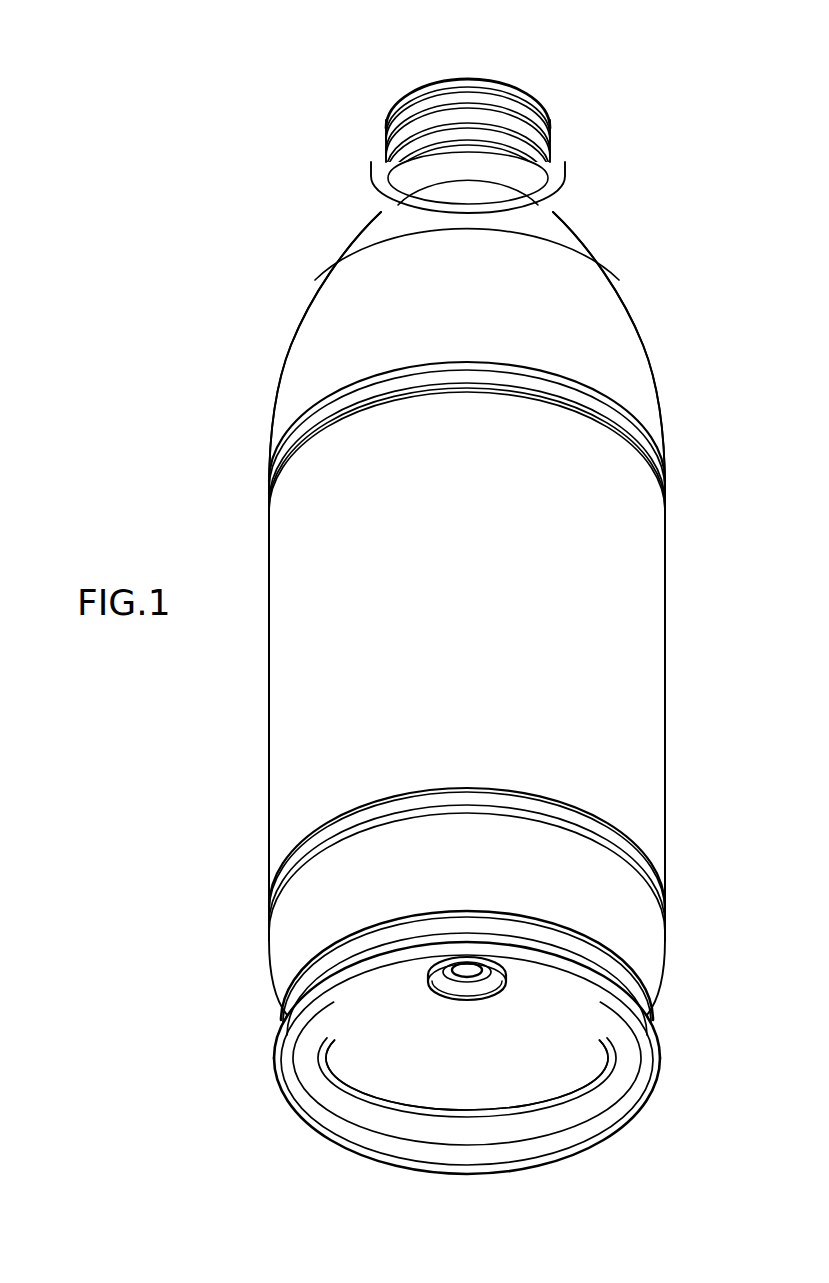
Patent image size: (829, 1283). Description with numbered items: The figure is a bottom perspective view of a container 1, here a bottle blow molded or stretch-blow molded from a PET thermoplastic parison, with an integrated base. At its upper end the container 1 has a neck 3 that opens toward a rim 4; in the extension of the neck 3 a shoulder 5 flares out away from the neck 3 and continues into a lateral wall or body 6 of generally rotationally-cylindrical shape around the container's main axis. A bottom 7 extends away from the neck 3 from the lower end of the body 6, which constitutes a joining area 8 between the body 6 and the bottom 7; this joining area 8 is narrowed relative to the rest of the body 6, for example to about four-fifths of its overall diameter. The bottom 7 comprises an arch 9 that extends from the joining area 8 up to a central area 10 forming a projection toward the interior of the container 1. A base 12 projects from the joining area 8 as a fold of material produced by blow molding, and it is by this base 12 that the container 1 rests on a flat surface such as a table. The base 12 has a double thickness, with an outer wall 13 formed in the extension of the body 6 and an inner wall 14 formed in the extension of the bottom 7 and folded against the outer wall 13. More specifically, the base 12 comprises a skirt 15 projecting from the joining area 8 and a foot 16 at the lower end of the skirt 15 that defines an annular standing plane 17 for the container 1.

The container 1 is at (651, 292).
The neck 3 is at (530, 133).
The rim 4 is at (460, 78).
The shoulder 5 is at (361, 234).
The body 6 is at (632, 624).
The bottom 7 is at (513, 1063).
The joining area 8 is at (477, 907).
The arch 9 is at (405, 1070).
The central area 10 is at (472, 1003).
The base 12 is at (658, 1042).
The outer wall 13 is at (402, 937).
The inner wall 14 is at (318, 1070).
The skirt 15 is at (472, 1143).
The foot 16 is at (328, 1145).
The annular standing plane 17 is at (420, 1168).